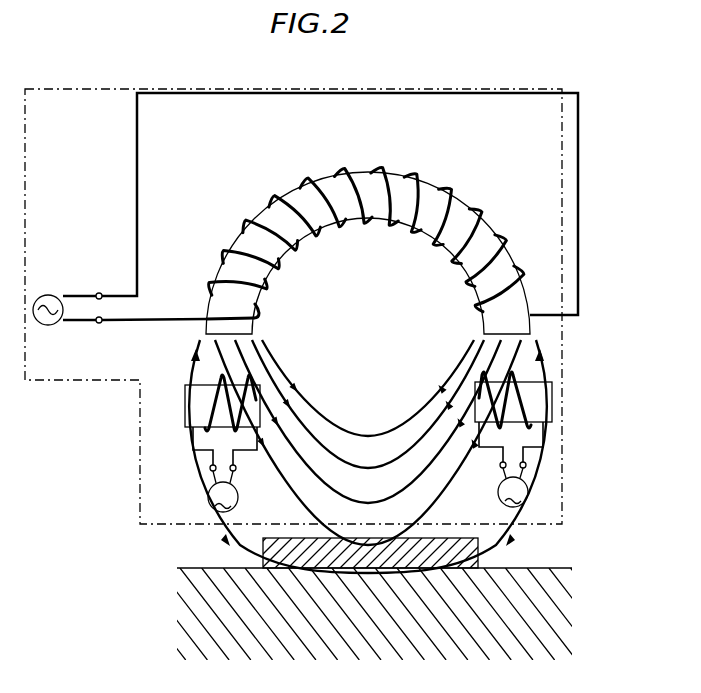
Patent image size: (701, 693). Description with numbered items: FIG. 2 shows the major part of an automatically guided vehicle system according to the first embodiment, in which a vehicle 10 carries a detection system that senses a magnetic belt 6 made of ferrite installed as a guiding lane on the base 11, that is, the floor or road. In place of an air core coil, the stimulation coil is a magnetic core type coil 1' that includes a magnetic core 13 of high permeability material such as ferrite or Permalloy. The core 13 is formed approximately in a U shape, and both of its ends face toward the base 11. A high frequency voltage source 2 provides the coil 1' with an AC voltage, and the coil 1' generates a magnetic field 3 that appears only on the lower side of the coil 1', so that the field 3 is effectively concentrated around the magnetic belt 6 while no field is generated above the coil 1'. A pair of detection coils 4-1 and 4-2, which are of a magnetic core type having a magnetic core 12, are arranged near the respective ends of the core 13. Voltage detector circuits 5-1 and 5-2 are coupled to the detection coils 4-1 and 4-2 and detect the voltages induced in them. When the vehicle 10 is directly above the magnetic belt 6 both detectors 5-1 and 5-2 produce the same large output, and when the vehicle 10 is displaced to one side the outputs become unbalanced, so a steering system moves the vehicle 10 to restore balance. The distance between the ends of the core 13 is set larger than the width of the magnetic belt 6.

The vehicle 10 is at (510, 87).
The high frequency voltage source 2 is at (49, 295).
The magnetic core type coil 1' is at (368, 233).
The magnetic core 13 is at (458, 218).
The magnetic field 3 is at (328, 418).
The detection coil 4-1 is at (185, 388).
The detection coil 4-2 is at (552, 384).
The voltage detector circuit 5-1 is at (208, 495).
The voltage detector circuit 5-2 is at (528, 495).
The magnetic core 12 is at (552, 400).
The magnetic belt 6 is at (470, 548).
The base 11 is at (177, 614).